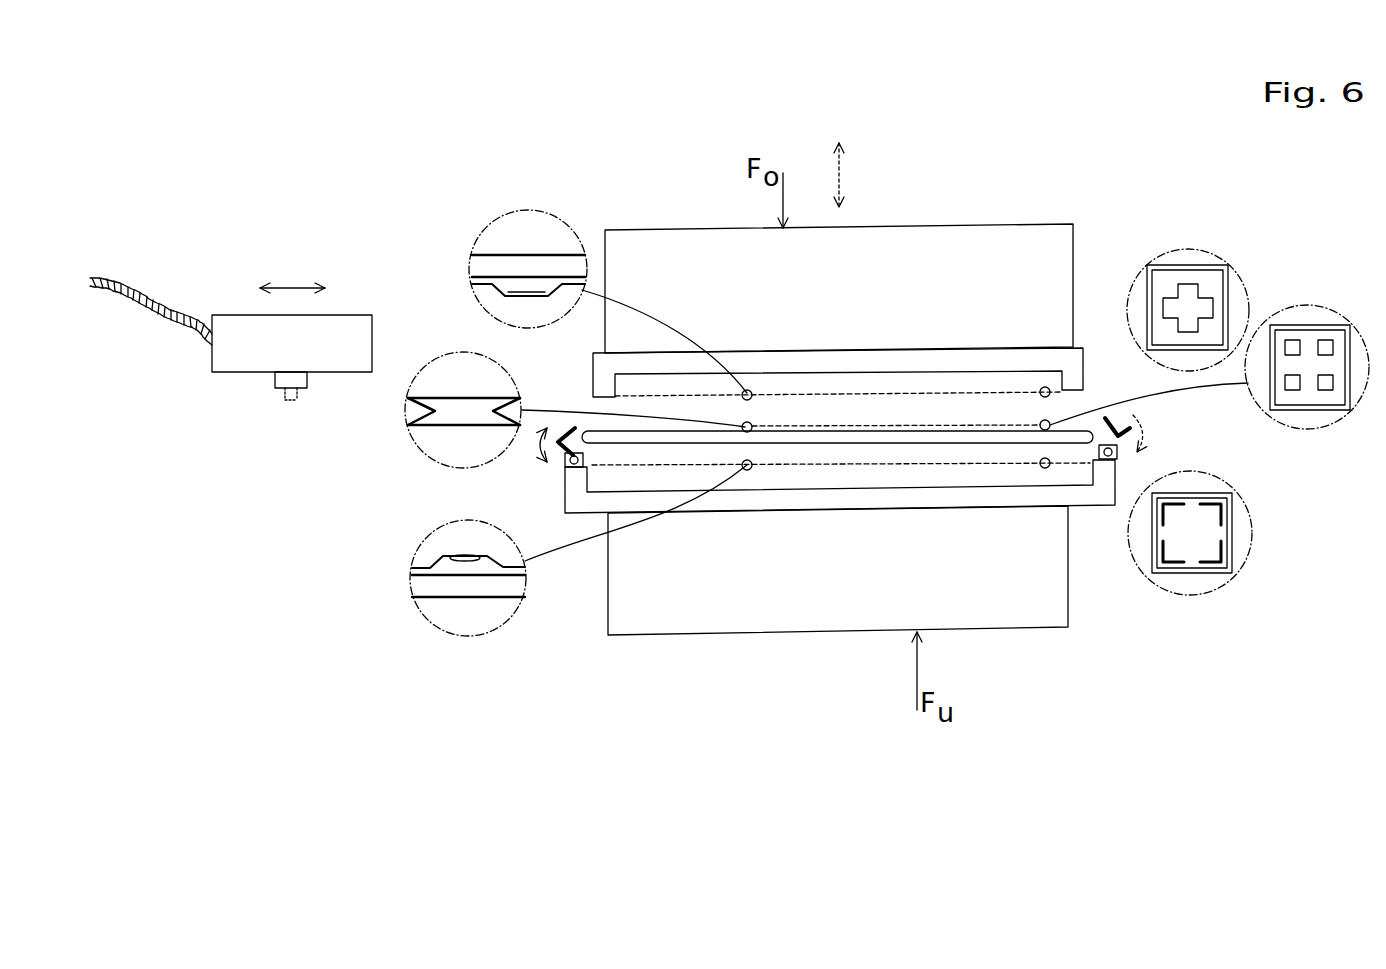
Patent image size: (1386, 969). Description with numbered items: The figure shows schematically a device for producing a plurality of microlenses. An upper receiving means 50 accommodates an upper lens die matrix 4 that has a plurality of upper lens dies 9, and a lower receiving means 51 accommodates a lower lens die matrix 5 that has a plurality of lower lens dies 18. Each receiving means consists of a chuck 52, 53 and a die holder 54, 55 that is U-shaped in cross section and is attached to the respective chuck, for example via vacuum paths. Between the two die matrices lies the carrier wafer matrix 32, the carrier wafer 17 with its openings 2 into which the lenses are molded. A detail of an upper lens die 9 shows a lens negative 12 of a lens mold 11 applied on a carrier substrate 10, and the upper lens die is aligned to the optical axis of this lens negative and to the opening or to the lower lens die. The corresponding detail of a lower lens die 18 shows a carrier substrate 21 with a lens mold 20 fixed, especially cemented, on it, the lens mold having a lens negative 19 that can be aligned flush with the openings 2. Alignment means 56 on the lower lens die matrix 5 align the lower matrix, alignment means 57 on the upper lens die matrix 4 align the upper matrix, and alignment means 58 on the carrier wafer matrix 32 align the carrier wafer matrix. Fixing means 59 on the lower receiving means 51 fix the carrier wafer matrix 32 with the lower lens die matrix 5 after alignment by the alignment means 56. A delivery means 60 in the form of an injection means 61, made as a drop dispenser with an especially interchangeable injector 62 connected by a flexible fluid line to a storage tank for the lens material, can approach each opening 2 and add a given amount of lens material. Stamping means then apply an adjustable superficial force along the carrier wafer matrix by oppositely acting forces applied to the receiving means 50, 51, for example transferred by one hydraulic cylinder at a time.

The opening 2 is at (457, 415).
The upper lens die matrix 4 is at (980, 380).
The lower lens die matrix 5 is at (875, 473).
The upper lens die 9 is at (1075, 355).
The carrier substrate 10 is at (481, 263).
The lens mold 11 is at (470, 282).
The lens negative 12 is at (500, 293).
The carrier wafer 17 is at (398, 418).
The lower lens die 18 is at (973, 500).
The lens negative 19 is at (462, 556).
The lens mold 20 is at (412, 568).
The carrier substrate 21 is at (440, 588).
The carrier wafer matrix 32 is at (1055, 430).
The receiving means 50 is at (925, 193).
The receiving means 51 is at (800, 667).
The chuck 52 is at (640, 240).
The chuck 53 is at (632, 623).
The die holder 54 is at (1072, 388).
The die holder 55 is at (1023, 475).
The alignment means 56 is at (1240, 557).
The alignment means 57 is at (1197, 253).
The alignment means 58 is at (1328, 417).
The fixing means 59 is at (1118, 432).
The delivery means 60 is at (198, 438).
The injection means 61 is at (237, 298).
The injector 62 is at (142, 290).